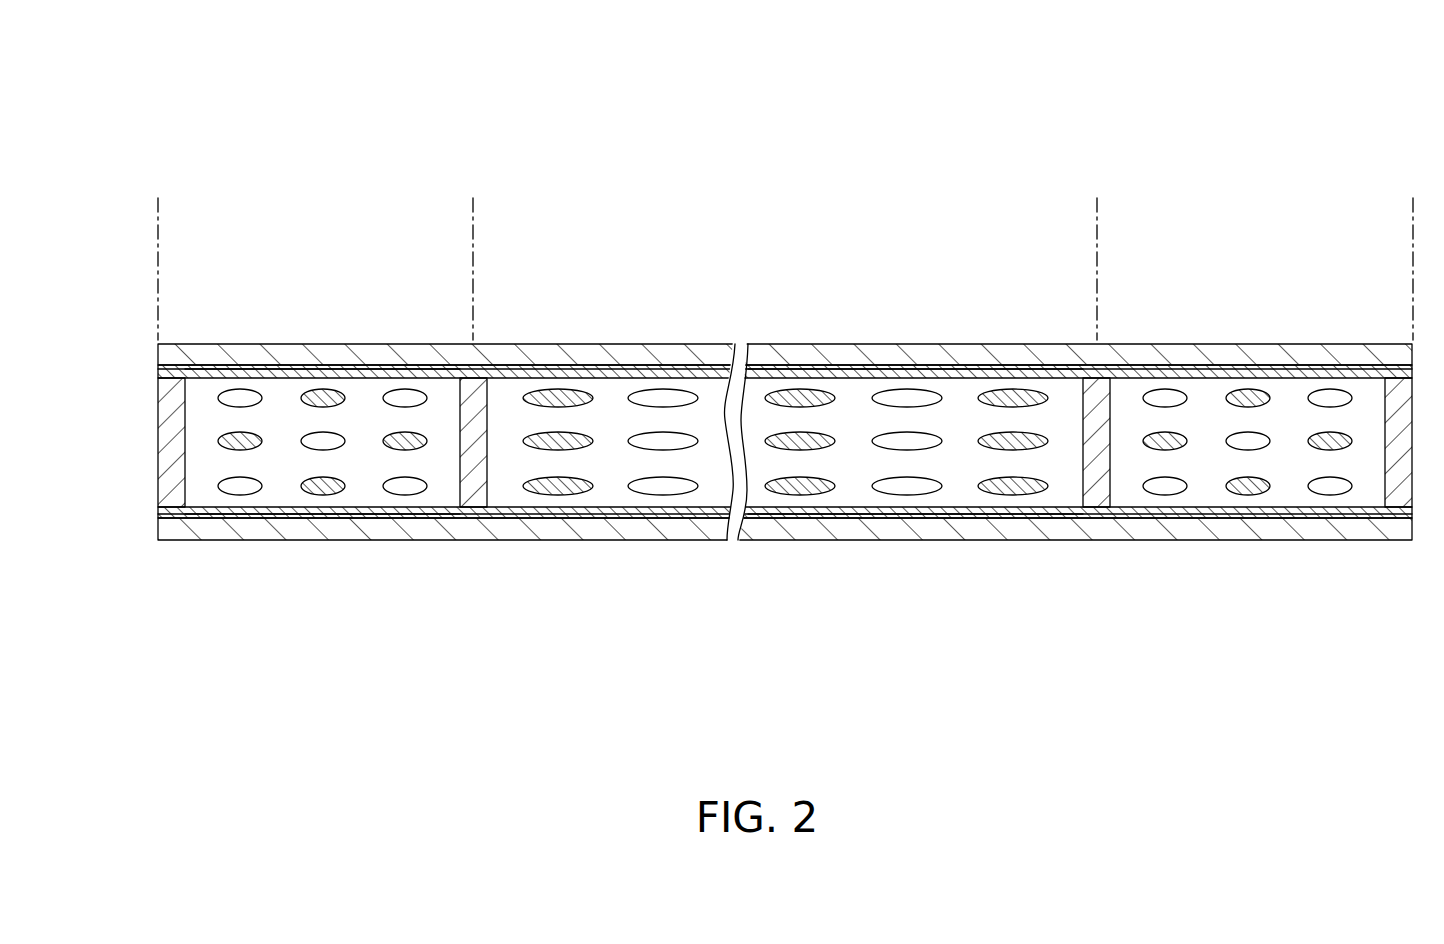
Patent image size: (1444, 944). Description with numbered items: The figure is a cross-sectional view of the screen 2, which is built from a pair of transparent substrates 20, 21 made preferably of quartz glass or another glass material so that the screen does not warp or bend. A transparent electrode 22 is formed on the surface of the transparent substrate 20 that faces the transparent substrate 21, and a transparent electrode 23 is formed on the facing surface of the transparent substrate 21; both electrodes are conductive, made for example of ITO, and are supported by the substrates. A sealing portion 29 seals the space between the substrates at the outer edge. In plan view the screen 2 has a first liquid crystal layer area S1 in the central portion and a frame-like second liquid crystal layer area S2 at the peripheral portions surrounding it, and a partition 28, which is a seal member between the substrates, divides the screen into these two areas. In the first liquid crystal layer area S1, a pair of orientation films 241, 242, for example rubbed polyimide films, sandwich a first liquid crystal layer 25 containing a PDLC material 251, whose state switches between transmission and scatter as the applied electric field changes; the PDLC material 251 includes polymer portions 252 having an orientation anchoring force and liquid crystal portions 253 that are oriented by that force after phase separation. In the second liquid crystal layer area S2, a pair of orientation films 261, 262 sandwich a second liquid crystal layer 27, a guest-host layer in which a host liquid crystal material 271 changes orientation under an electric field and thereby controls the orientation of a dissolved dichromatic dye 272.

The screen 2 is at (952, 147).
The transparent substrate 20 is at (585, 353).
The transparent substrate 21 is at (592, 530).
The transparent electrode 22 is at (853, 373).
The transparent electrode 23 is at (820, 513).
The first liquid crystal layer 25 is at (963, 493).
The partition 28 is at (472, 392).
The sealing portion 29 is at (162, 410).
The orientation film 241 is at (690, 373).
The orientation film 242 is at (663, 513).
The PDLC material 251 is at (785, 571).
The polymer portions 252 is at (900, 445).
The liquid crystal portions 253 is at (817, 447).
The orientation film 261 is at (311, 372).
The orientation film 262 is at (260, 513).
The second liquid crystal layer 27 is at (785, 529).
The liquid crystal material 271 is at (413, 490).
The dichromatic dye 272 is at (392, 450).
The first liquid crystal layer area S1 is at (1095, 220).
The second liquid crystal layer area S2 is at (470, 220).